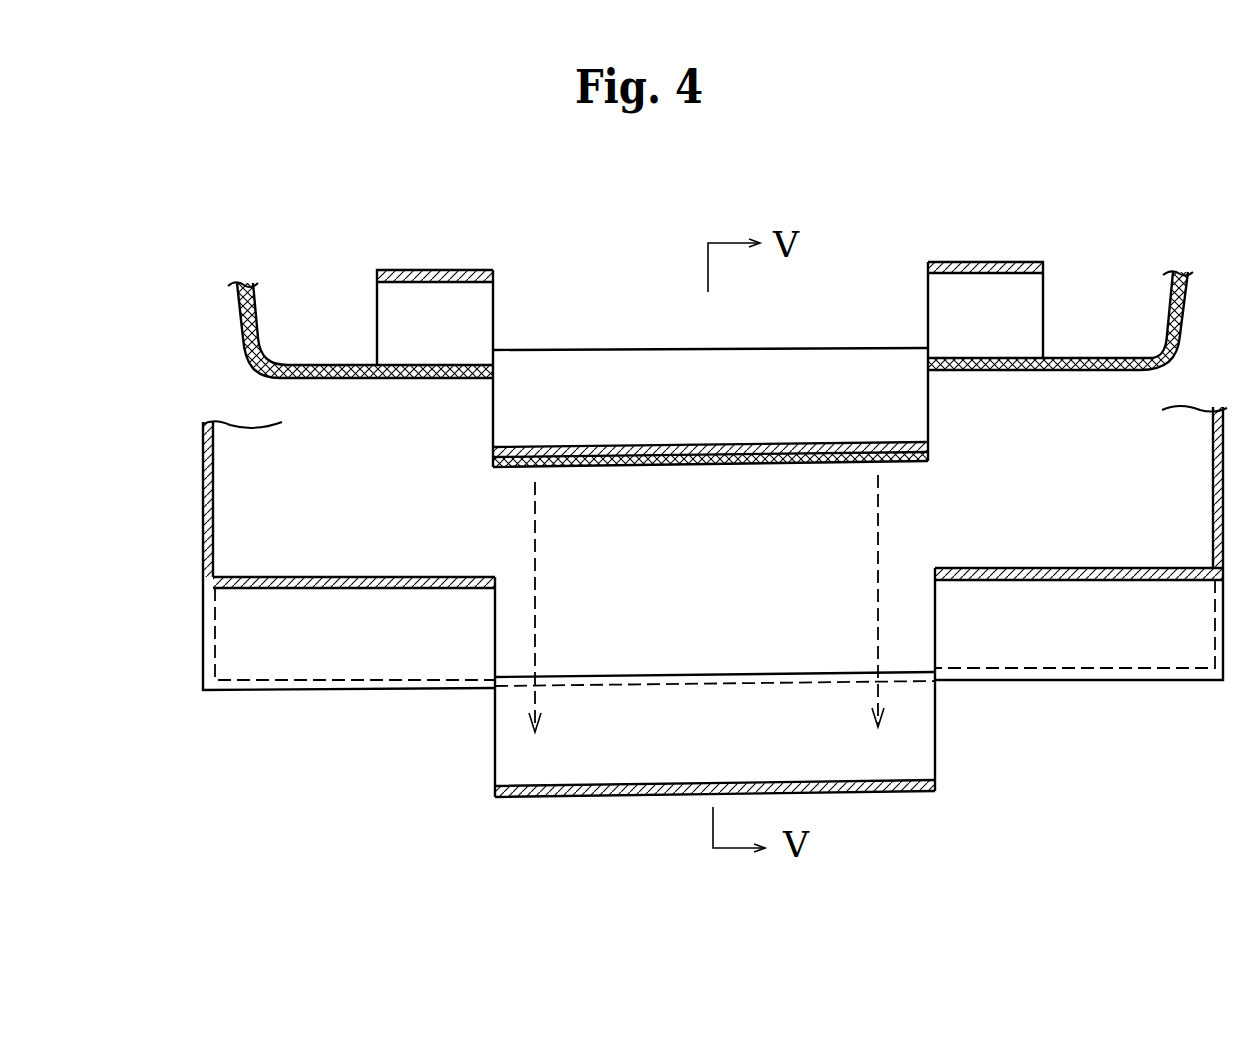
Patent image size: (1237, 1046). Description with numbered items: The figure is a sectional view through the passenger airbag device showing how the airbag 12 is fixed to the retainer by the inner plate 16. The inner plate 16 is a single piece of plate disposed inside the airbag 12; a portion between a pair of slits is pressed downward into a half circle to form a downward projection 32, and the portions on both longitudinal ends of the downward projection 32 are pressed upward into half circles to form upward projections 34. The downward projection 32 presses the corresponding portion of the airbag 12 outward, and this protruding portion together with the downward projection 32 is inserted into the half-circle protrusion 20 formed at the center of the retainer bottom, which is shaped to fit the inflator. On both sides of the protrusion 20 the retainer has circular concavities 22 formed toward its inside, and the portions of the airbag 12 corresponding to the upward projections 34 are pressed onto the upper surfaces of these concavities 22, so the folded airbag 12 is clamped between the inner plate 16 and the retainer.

The airbag 12 is at (250, 302).
The inner plate 16 is at (771, 332).
The downward projection 32 is at (537, 446).
The upward projections 34 is at (943, 268).
The protrusion 20 is at (883, 780).
The concavities 22 is at (437, 588).